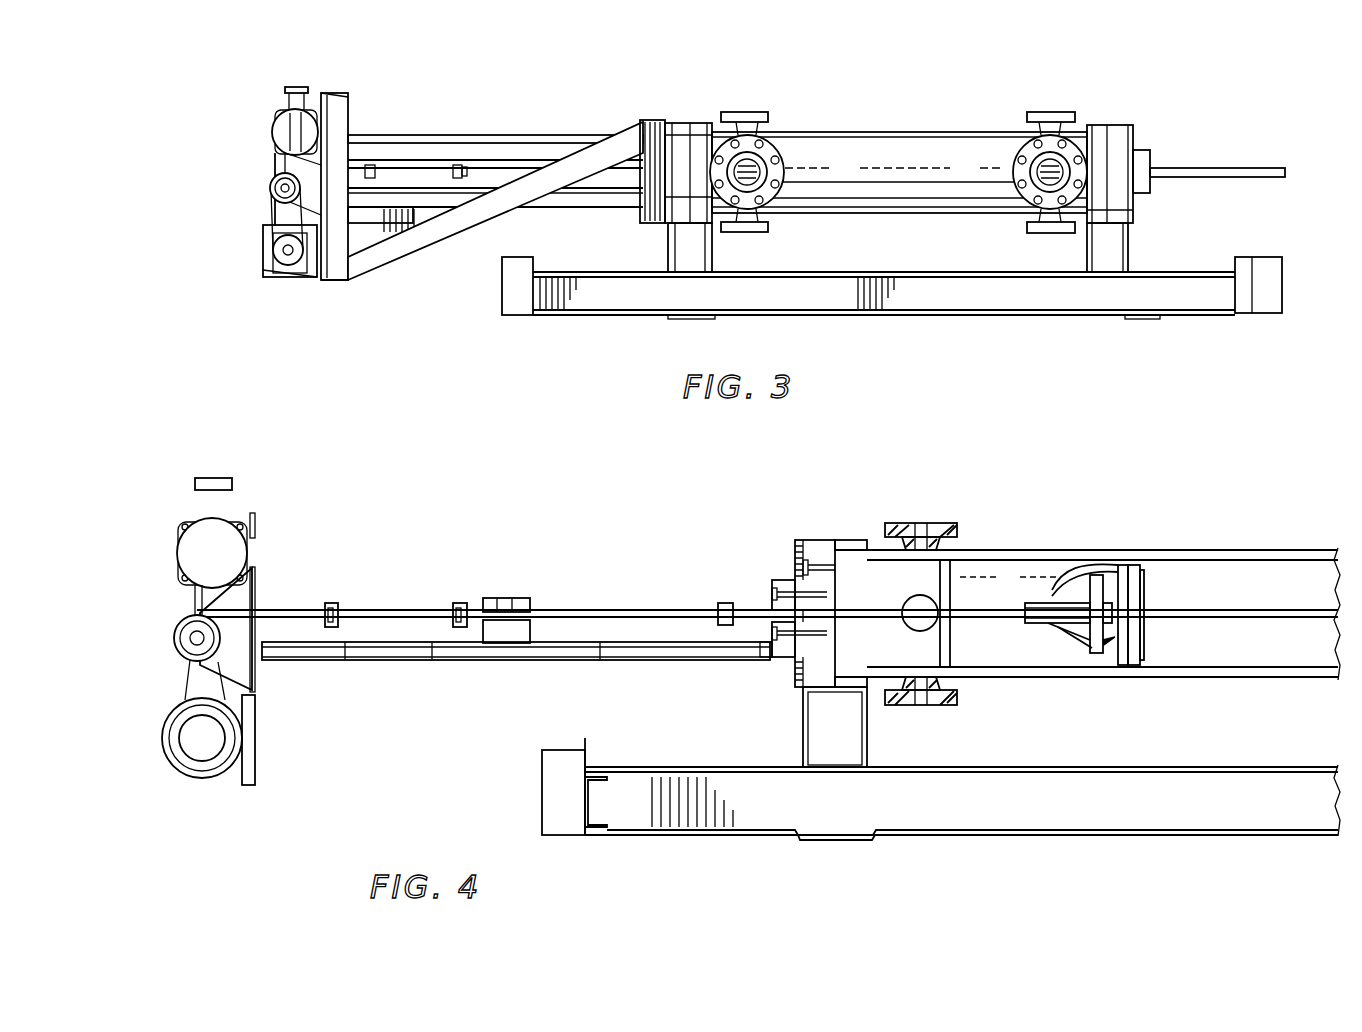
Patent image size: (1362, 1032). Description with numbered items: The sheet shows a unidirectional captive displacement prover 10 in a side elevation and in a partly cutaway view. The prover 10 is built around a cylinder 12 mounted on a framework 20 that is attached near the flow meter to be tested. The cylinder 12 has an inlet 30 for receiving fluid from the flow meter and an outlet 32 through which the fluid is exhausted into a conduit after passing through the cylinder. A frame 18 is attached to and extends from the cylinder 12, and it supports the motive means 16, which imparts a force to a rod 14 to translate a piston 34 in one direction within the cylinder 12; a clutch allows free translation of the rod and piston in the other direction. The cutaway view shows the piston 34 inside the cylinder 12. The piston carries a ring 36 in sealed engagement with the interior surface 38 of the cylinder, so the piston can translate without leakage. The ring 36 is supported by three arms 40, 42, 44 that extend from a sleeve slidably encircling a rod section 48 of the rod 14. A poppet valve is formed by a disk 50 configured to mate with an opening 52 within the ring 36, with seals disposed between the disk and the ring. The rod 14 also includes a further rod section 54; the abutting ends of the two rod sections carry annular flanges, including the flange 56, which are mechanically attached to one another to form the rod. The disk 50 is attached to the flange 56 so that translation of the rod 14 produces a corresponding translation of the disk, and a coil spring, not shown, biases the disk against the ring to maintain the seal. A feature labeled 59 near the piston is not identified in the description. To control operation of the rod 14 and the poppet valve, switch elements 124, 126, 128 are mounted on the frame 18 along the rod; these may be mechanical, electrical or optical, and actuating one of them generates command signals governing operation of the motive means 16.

In FIG. 3, the unidirectional captive displacement prover 10 is at (990, 376).
In FIG. 4, the unidirectional captive displacement prover 10 is at (1140, 752).
In FIG. 3, the cylinder 12 is at (858, 132).
In FIG. 4, the cylinder 12 is at (1107, 600).
In FIG. 3, the rod 14 is at (1226, 164).
In FIG. 3, the motive means 16 is at (266, 143).
In FIG. 4, the motive means 16 is at (171, 629).
In FIG. 3, the frame 18 is at (398, 266).
In FIG. 3, the framework 20 is at (627, 320).
In FIG. 4, the framework 20 is at (1037, 836).
In FIG. 3, the inlet 30 is at (753, 162).
In FIG. 3, the outlet 32 is at (1048, 162).
In FIG. 4, the piston 34 is at (1152, 587).
In FIG. 4, the ring 36 is at (1141, 568).
In FIG. 4, the interior surface 38 is at (1250, 590).
In FIG. 4, the arm 40 is at (1052, 590).
In FIG. 4, the arm 42 is at (1072, 633).
In FIG. 4, the arm 44 is at (1086, 637).
In FIG. 4, the rod section 48 is at (1038, 609).
In FIG. 4, the disk 50 is at (1096, 652).
In FIG. 4, the opening 52 is at (1144, 648).
In FIG. 4, the further rod section 54 is at (1287, 607).
In FIG. 4, the annular flange 56 is at (1132, 568).
In FIG. 4, the direction of travel 59 is at (1144, 603).
In FIG. 4, the switch element 124 is at (338, 604).
In FIG. 4, the second limit switch 126 is at (466, 604).
In FIG. 4, the switch element 128 is at (722, 603).